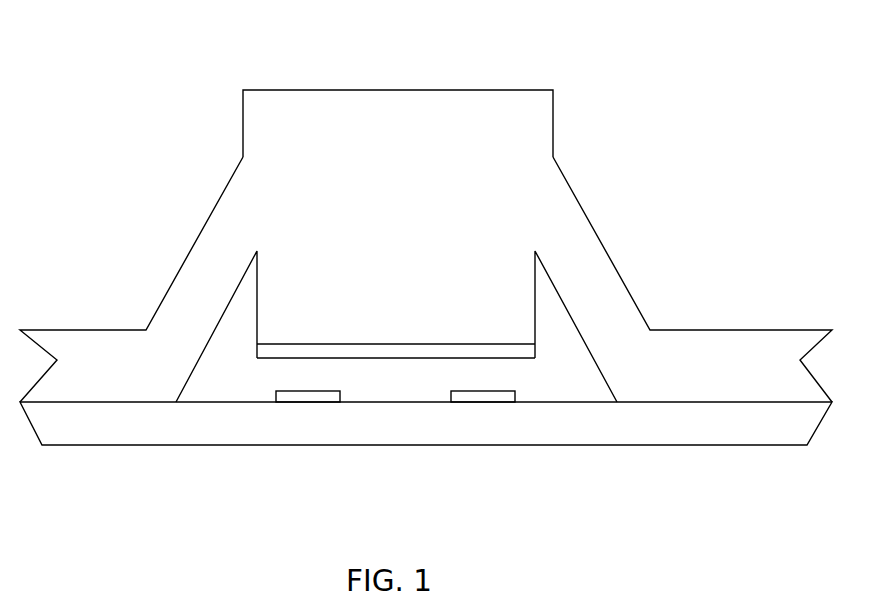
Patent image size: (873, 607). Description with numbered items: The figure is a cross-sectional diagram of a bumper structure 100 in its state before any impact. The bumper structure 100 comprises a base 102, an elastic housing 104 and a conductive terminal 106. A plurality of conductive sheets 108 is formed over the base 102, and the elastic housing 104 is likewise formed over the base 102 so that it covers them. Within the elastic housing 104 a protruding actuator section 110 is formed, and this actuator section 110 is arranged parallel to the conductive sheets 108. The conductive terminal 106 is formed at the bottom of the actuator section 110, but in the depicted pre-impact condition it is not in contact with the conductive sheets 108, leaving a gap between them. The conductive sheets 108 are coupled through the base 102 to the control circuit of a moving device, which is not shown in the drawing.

The bumper structure 100 is at (137, 274).
The base 102 is at (238, 427).
The elastic housing 104 is at (603, 308).
The conductive terminal 106 is at (466, 347).
The conductive sheets 108 is at (487, 396).
The actuator section 110 is at (385, 237).